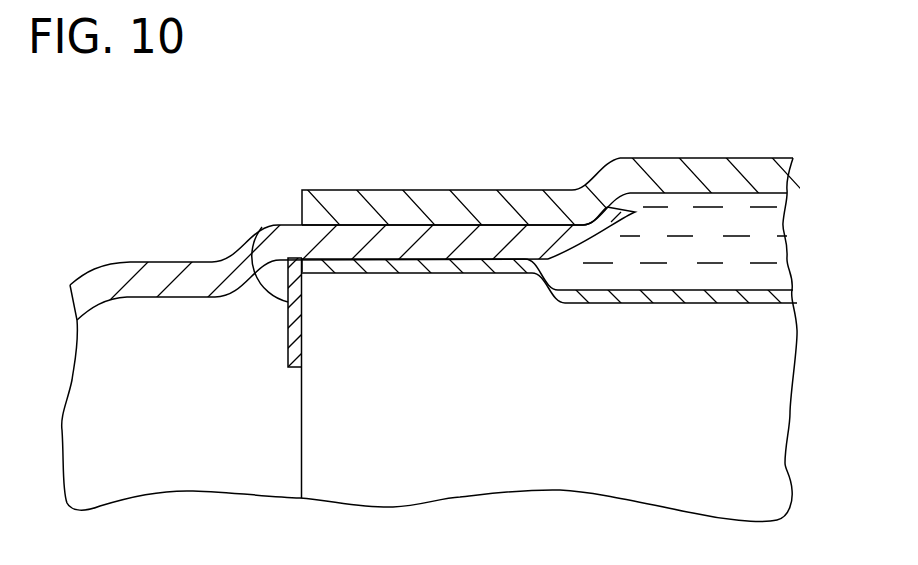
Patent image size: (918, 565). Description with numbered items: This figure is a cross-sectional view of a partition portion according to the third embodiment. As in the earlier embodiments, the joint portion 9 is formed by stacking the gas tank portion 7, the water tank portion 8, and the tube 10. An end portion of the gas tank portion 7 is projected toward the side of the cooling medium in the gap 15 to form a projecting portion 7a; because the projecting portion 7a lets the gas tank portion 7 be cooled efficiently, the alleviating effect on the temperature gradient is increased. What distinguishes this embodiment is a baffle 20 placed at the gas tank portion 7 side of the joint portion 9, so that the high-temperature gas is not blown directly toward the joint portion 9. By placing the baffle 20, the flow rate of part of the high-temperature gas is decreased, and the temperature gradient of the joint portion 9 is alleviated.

The gas tank portion 7 is at (173, 275).
The projecting portion 7a is at (612, 220).
The water tank portion 8 is at (718, 172).
The joint portion 9 is at (432, 190).
The tube 10 is at (788, 297).
The gap 15 is at (762, 233).
The baffle 20 is at (262, 227).